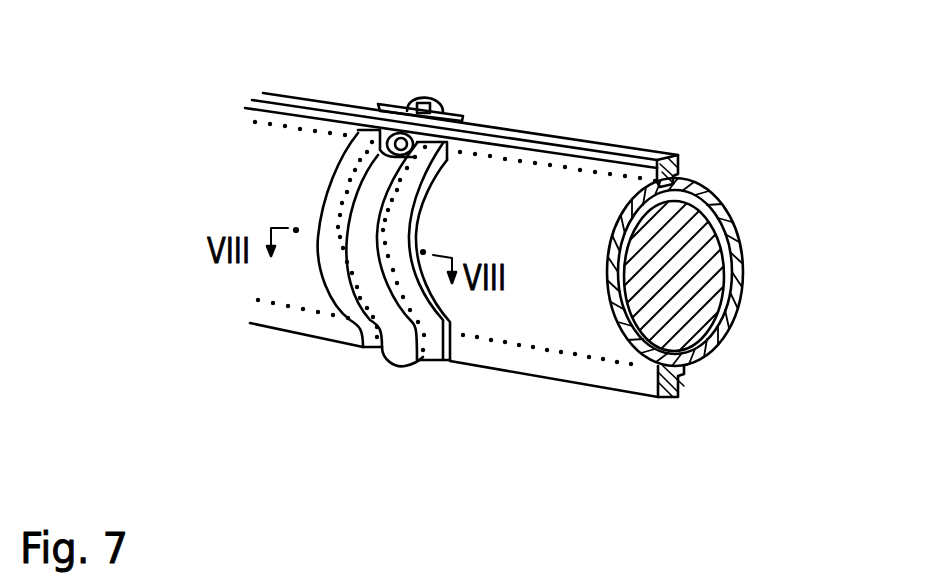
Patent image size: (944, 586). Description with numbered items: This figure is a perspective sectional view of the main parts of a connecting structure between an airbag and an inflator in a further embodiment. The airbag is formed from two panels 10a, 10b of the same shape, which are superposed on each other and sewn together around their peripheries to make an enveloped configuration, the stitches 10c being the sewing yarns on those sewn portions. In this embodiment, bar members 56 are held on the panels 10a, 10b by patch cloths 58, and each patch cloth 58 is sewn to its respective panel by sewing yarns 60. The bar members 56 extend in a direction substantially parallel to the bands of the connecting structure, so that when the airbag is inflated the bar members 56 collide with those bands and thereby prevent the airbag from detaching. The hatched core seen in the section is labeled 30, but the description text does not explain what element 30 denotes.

The panel 10a is at (742, 299).
The panel 10b is at (527, 330).
The stitches 10c is at (553, 137).
The inner hose core 30 is at (740, 200).
The bar member 56 is at (412, 100).
The patch cloth 58 is at (440, 100).
The sewing yarn 60 is at (322, 214).